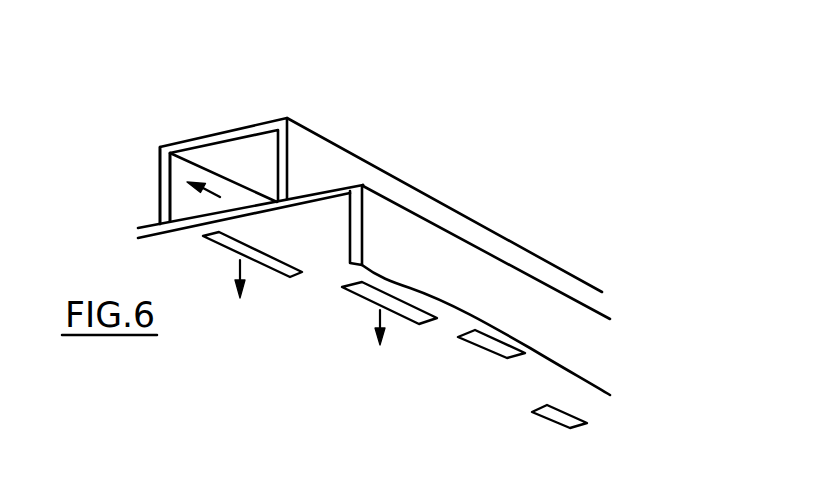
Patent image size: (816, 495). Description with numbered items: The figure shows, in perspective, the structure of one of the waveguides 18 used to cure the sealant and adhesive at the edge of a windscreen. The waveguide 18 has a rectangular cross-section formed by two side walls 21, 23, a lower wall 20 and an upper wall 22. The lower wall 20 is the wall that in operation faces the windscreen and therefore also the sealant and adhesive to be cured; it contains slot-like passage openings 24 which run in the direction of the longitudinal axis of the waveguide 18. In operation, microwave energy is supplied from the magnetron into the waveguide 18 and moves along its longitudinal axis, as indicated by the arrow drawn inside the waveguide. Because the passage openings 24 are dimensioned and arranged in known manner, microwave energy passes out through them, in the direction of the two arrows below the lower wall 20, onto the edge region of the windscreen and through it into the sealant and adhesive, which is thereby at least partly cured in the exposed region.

The waveguide 18 is at (267, 153).
The lower wall 20 is at (350, 183).
The side wall 21 is at (462, 226).
The upper wall 22 is at (222, 128).
The side wall 23 is at (163, 189).
The passage openings 24 is at (362, 292).